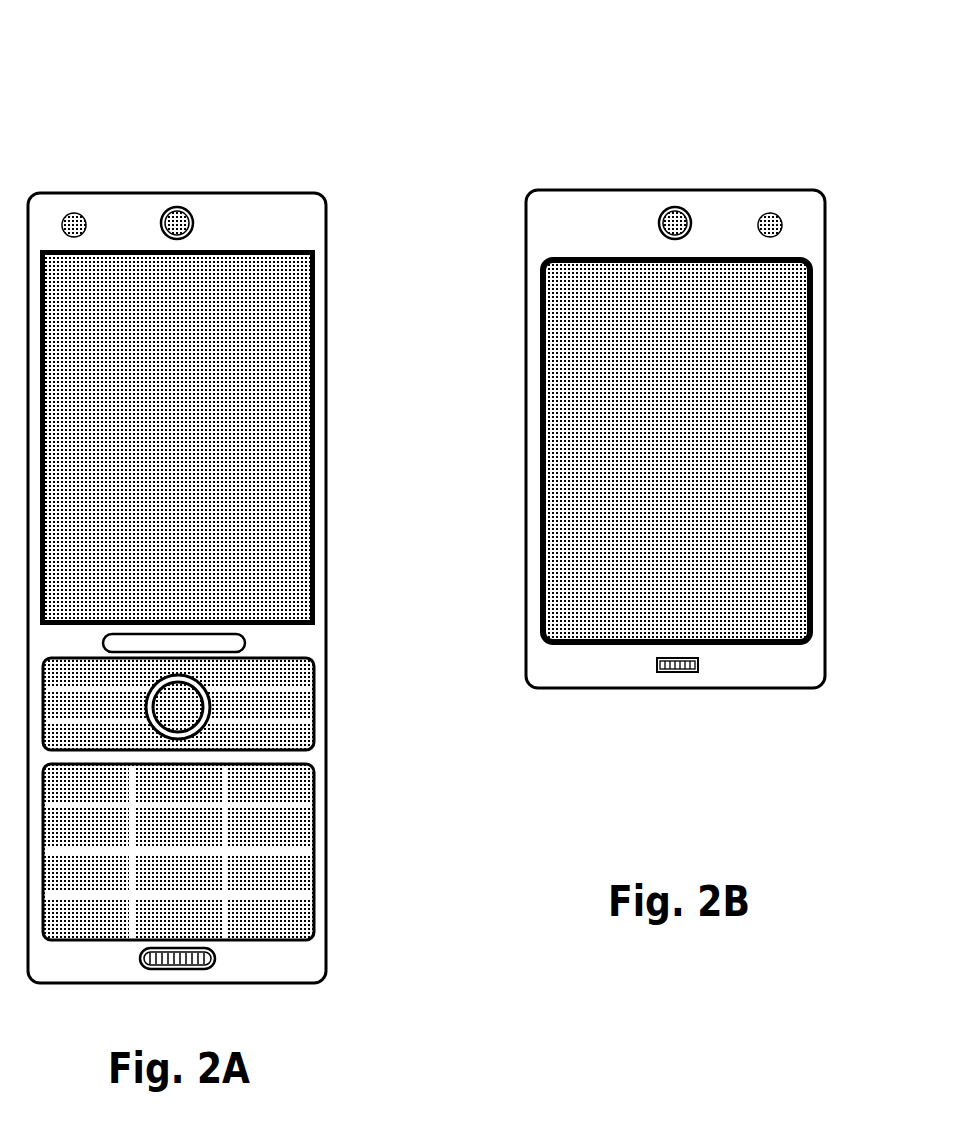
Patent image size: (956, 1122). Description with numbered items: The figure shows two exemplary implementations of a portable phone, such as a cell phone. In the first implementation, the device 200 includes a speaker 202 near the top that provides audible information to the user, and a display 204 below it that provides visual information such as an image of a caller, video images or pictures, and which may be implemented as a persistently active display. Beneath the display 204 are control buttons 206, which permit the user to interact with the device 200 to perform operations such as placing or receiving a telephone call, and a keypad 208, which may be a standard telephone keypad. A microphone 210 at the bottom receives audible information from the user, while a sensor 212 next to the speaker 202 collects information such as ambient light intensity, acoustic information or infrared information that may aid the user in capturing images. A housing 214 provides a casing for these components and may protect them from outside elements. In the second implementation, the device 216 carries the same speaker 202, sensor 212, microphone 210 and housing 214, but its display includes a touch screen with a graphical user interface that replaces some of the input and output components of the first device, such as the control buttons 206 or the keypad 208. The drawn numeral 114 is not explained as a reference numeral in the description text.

In FIG. 2A, the device 200 is at (178, 88).
In FIG. 2B, the device 216 is at (681, 88).
In FIG. 2A, the sensor 212 is at (74, 213).
In FIG. 2B, the sensor 212 is at (770, 213).
In FIG. 2A, the speaker 202 is at (194, 222).
In FIG. 2B, the speaker 202 is at (658, 222).
In FIG. 2A, the display 204 is at (177, 378).
In FIG. 2B, the display 204 is at (676, 378).
In FIG. 2A, the control buttons 206 is at (316, 691).
In FIG. 2A, the keypad 208 is at (316, 792).
In FIG. 2A, the microphone 210 is at (216, 959).
In FIG. 2B, the microphone 210 is at (699, 665).
In FIG. 2A, the housing 214 is at (327, 842).
In FIG. 2B, the housing 214 is at (559, 823).
In FIG. 2B, the touch screen display 114 is at (525, 640).